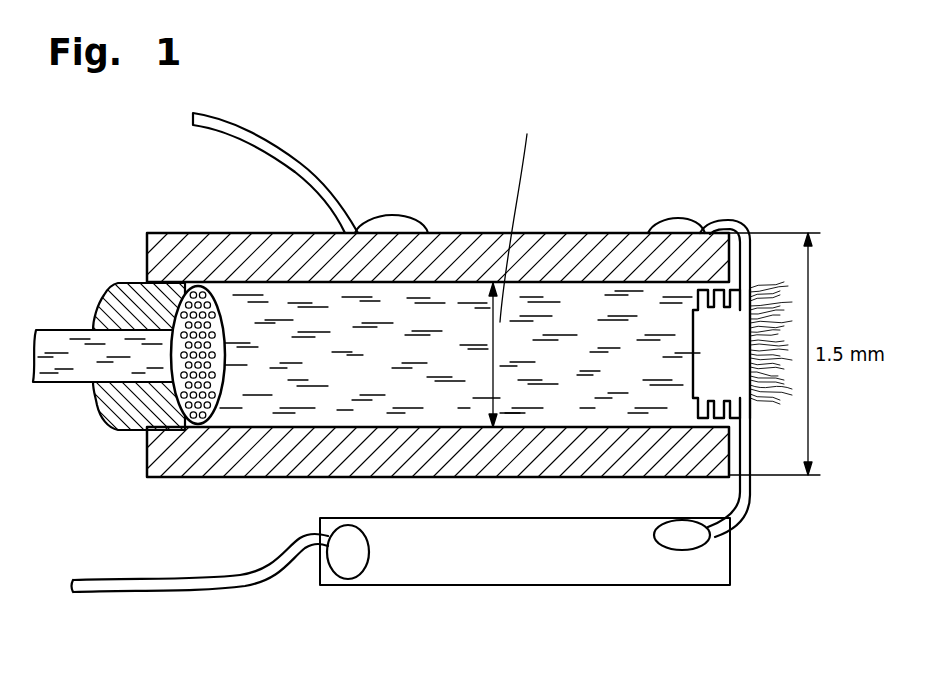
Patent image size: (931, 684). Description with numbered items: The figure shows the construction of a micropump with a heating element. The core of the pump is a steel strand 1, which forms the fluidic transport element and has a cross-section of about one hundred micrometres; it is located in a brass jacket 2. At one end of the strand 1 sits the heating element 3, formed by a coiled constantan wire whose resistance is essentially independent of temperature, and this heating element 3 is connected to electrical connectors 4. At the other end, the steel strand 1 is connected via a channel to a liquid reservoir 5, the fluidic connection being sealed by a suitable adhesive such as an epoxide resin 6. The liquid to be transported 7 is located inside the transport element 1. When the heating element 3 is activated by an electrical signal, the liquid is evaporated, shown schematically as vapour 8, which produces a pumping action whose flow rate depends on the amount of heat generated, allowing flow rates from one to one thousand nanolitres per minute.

The steel strand 1 is at (592, 300).
The brass jacket 2 is at (458, 248).
The heating element 3 is at (745, 326).
The electrical connectors 4 is at (393, 225).
The liquid reservoir 5 is at (55, 338).
The epoxide resin 6 is at (112, 308).
The liquid to be transported 7 is at (542, 297).
The vapour 8 is at (772, 402).